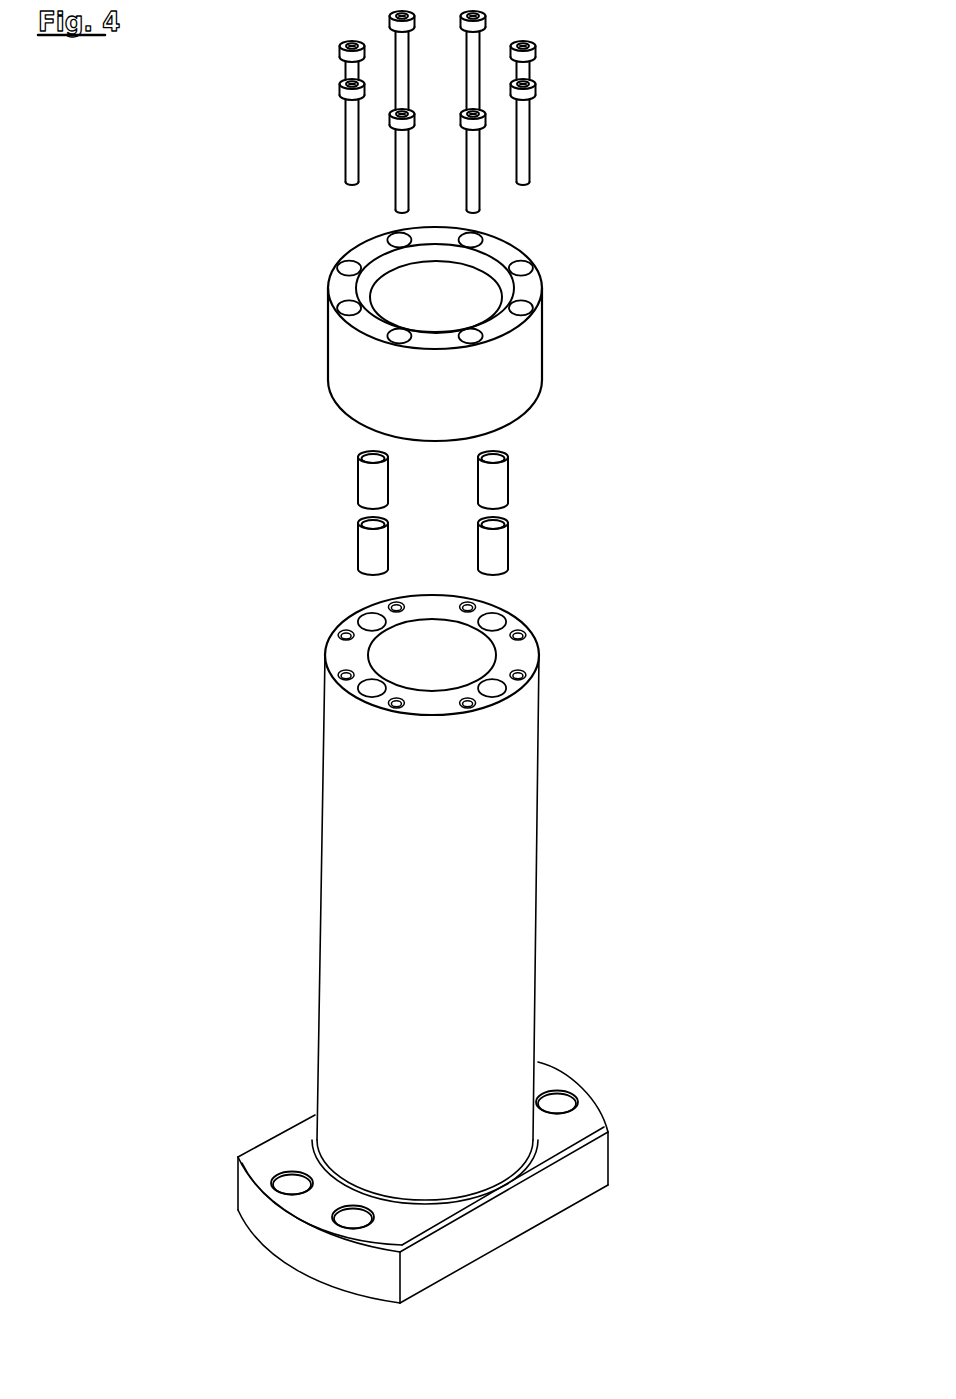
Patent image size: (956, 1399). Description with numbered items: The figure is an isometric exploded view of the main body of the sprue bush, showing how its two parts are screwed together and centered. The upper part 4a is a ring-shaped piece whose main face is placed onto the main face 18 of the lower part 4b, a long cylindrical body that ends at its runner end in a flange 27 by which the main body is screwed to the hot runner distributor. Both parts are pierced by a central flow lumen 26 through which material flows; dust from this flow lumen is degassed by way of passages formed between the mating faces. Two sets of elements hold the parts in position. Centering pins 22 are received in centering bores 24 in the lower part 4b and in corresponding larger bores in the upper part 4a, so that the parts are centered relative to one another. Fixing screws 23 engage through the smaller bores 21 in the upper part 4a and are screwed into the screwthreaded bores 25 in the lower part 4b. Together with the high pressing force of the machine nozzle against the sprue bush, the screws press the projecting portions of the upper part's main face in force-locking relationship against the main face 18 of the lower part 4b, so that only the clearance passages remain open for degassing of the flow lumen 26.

The fixing screws 23 is at (525, 155).
The bores 21 is at (520, 272).
The flow lumen 26 is at (415, 287).
The upper part 4a is at (502, 334).
The centering pins 22 is at (495, 487).
The main face 18 is at (430, 651).
The screwthreaded bores 25 is at (518, 635).
The centering bores 24 is at (492, 688).
The lower part 4b is at (498, 850).
The flange 27 is at (562, 1132).